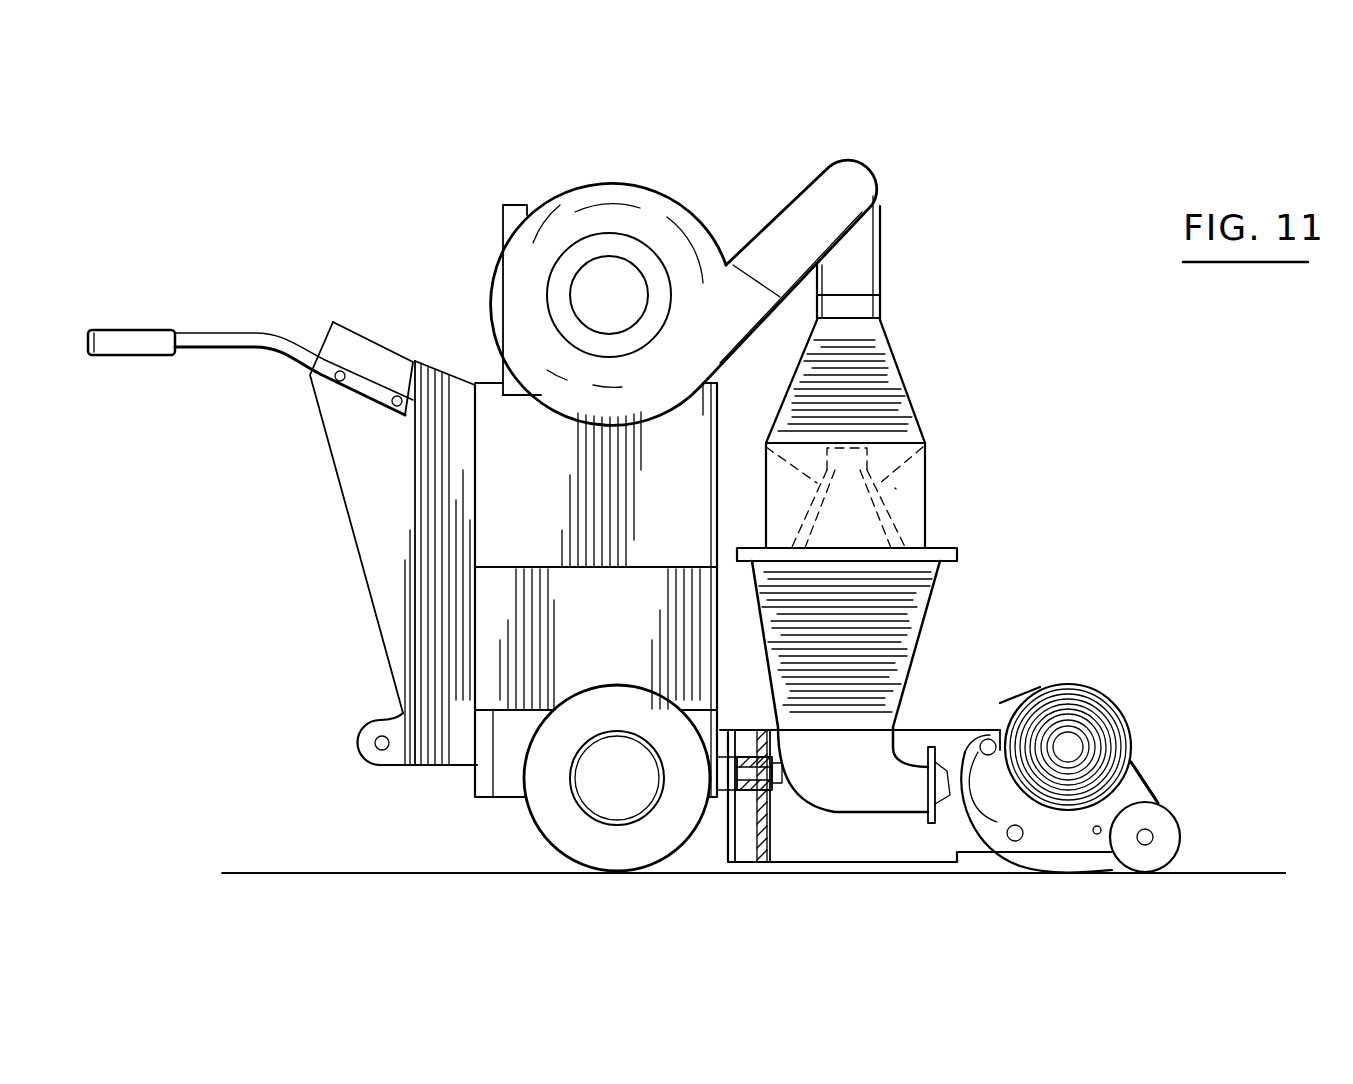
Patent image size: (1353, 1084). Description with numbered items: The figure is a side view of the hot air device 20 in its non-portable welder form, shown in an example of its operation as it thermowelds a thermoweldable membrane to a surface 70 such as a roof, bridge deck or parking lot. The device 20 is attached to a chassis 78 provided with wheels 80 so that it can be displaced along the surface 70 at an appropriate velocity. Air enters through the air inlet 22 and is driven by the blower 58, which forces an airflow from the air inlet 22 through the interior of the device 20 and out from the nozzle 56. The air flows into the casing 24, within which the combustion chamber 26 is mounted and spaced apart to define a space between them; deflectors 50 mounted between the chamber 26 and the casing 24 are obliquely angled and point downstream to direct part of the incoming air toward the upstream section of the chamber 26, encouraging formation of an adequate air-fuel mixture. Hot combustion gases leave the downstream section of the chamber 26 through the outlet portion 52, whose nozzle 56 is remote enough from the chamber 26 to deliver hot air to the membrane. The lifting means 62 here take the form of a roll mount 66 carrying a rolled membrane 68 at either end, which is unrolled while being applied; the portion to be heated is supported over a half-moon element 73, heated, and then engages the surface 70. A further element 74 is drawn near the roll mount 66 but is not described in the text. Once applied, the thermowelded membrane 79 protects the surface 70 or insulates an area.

The hot air device 20 is at (960, 177).
The air inlet 22 is at (587, 288).
The casing 24 is at (920, 387).
The combustion chamber 26 is at (895, 488).
The deflectors 50 is at (893, 473).
The outlet portion 52 is at (907, 612).
The nozzle 56 is at (940, 776).
The blower 58 is at (567, 195).
The lifting means 62 is at (1150, 773).
The roll mount 66 is at (1067, 833).
The rolled membrane 68 is at (1095, 690).
The surface 70 is at (266, 873).
The half-moon element 73 is at (983, 823).
The idler pulley 74 is at (1168, 845).
The chassis 78 is at (385, 556).
The thermowelded membrane 79 is at (1262, 871).
The wheels 80 is at (542, 807).